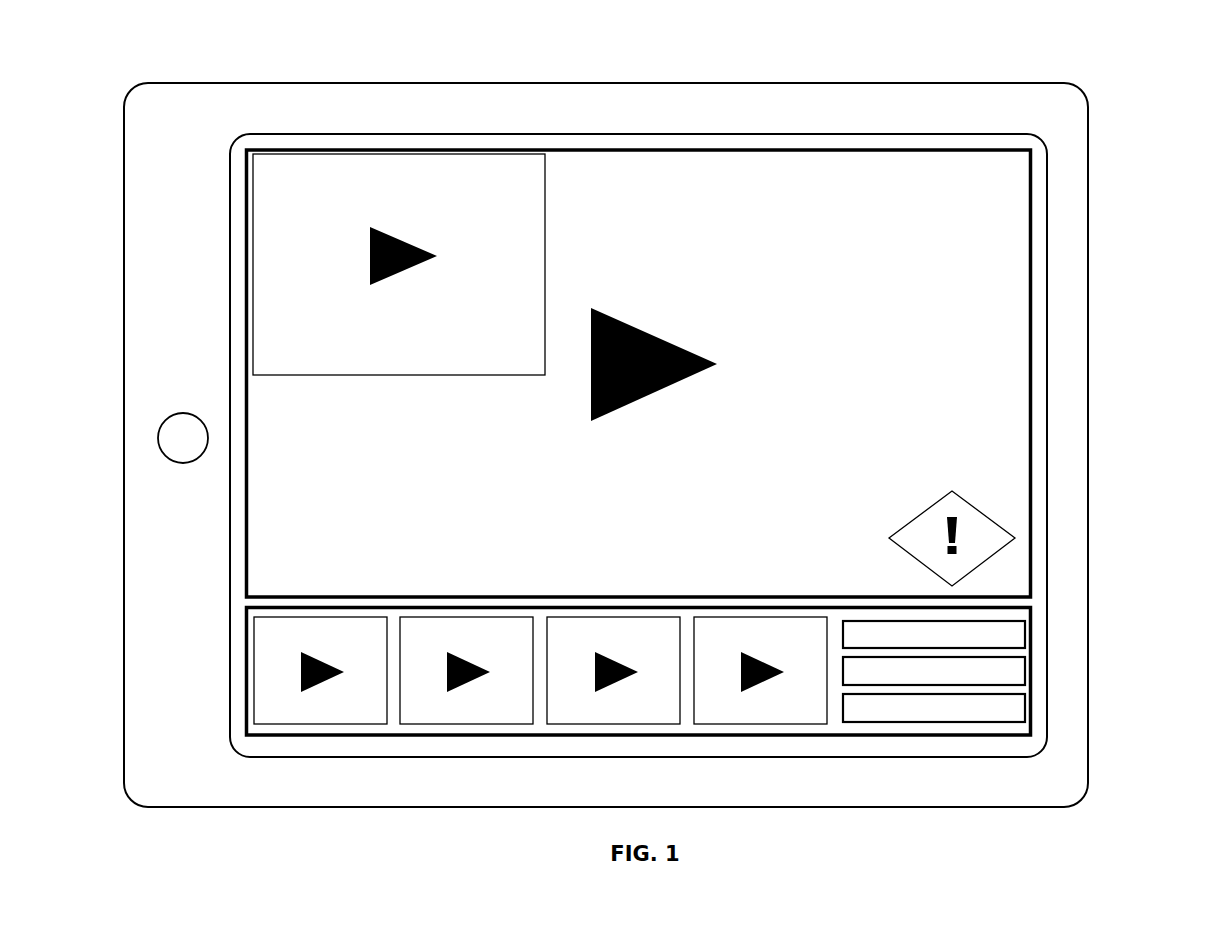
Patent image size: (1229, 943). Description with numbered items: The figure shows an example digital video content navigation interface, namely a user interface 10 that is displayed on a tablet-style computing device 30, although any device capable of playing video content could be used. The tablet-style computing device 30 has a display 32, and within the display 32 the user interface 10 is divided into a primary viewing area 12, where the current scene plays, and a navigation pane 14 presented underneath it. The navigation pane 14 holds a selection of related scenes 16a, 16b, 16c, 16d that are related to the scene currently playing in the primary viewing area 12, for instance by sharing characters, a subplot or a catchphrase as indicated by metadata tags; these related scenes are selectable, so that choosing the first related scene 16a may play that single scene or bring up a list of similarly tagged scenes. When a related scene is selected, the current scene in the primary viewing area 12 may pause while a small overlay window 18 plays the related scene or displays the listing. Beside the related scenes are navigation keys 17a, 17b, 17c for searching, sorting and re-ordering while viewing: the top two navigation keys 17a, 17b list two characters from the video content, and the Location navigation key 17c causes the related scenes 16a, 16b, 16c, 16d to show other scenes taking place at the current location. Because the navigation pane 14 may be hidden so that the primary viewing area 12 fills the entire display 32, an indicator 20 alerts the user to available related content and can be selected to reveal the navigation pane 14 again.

The user interface 10 is at (1063, 130).
The tablet-style computing device 30 is at (1152, 318).
The display 32 is at (1048, 447).
The primary viewing area 12 is at (650, 490).
The small overlay window 18 is at (524, 356).
The indicator 20 is at (1015, 538).
The navigation pane 14 is at (858, 735).
The first related scene 16a is at (338, 718).
The related scene 16b is at (484, 718).
The related scene 16c is at (632, 718).
The related scene 16d is at (778, 718).
The navigation key 17a is at (1026, 624).
The navigation key 17b is at (1026, 670).
The navigation key 17c is at (1026, 708).